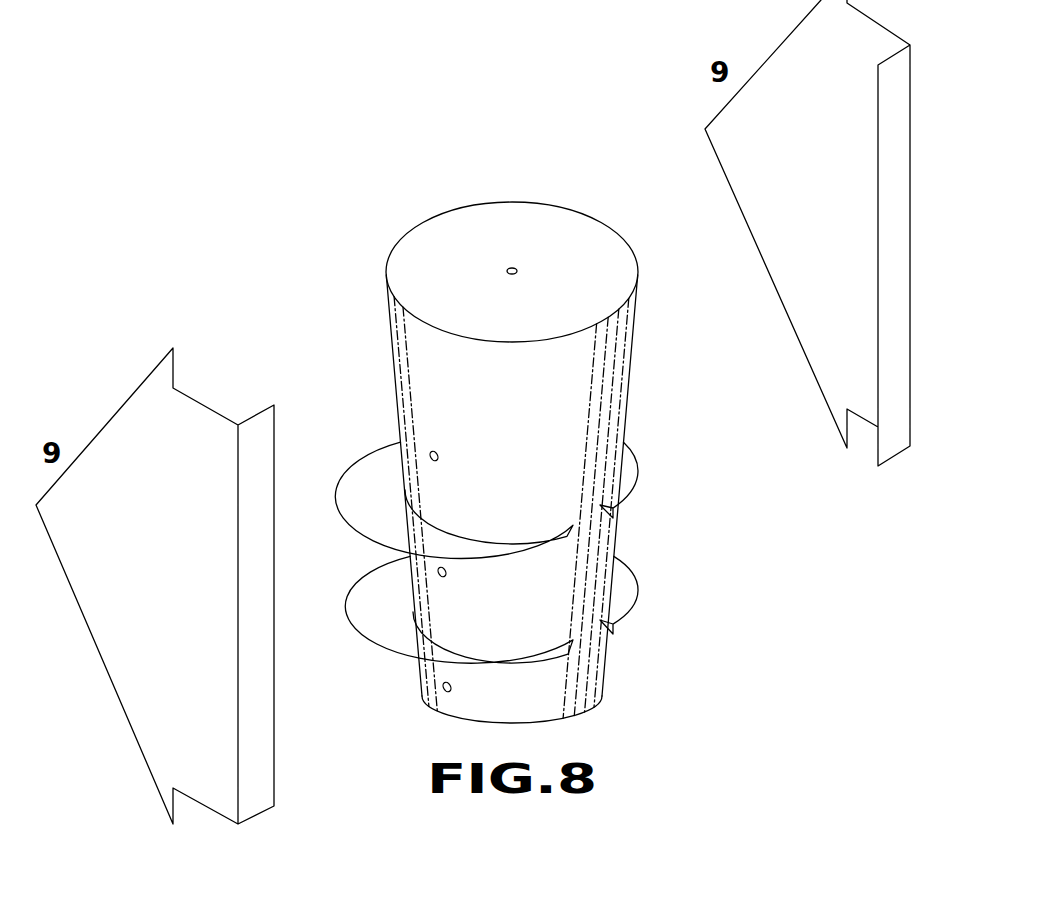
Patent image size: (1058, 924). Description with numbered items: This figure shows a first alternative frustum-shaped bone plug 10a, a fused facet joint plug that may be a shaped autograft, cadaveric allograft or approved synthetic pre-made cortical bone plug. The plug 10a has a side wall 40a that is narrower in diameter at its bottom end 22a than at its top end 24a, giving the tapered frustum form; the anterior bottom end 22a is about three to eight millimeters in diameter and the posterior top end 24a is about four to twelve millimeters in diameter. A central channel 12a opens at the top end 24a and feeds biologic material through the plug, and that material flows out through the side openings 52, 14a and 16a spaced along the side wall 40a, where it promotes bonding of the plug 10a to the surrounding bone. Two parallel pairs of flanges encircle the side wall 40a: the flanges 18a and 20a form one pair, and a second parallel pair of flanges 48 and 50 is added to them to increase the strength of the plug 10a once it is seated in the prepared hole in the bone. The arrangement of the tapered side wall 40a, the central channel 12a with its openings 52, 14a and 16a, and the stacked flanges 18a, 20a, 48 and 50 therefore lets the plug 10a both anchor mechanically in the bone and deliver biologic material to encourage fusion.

The plug 10a is at (652, 374).
The central channel 12a is at (513, 266).
The opening 14a is at (441, 568).
The opening 16a is at (447, 691).
The flange 18a is at (388, 600).
The flange 20a is at (637, 580).
The bottom end 22a is at (600, 663).
The top end 24a is at (633, 333).
The side wall 40a is at (625, 414).
The flange 48 is at (388, 470).
The flange 50 is at (637, 462).
The opening 52 is at (432, 452).